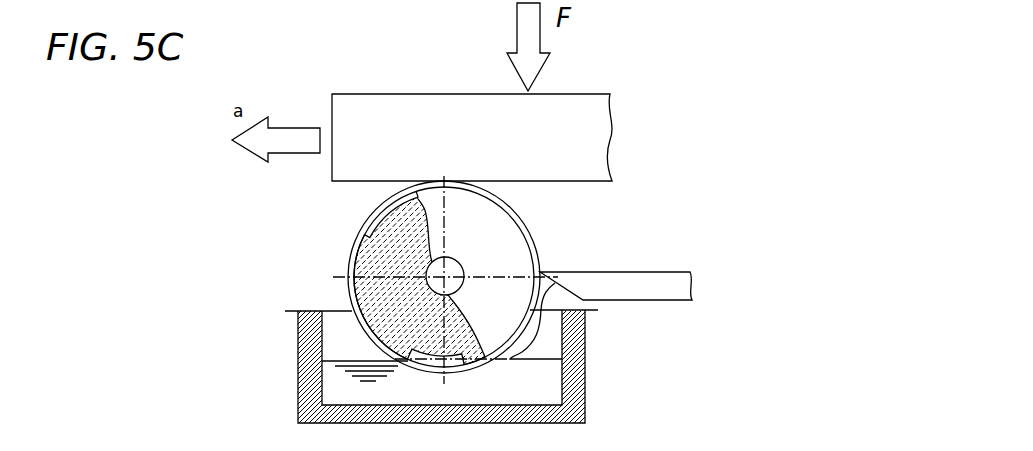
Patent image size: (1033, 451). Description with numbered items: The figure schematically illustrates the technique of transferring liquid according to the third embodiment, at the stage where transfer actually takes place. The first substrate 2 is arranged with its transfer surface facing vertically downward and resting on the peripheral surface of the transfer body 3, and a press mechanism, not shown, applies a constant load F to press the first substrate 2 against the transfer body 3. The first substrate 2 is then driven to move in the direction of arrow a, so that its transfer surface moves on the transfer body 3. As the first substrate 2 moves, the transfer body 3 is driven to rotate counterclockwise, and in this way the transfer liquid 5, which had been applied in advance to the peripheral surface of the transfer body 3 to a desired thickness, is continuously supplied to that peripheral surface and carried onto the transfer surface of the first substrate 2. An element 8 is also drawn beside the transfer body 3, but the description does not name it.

The first substrate 2 is at (373, 107).
The transfer body 3 is at (508, 240).
The transfer liquid 5 is at (354, 364).
The blade 8 is at (628, 284).